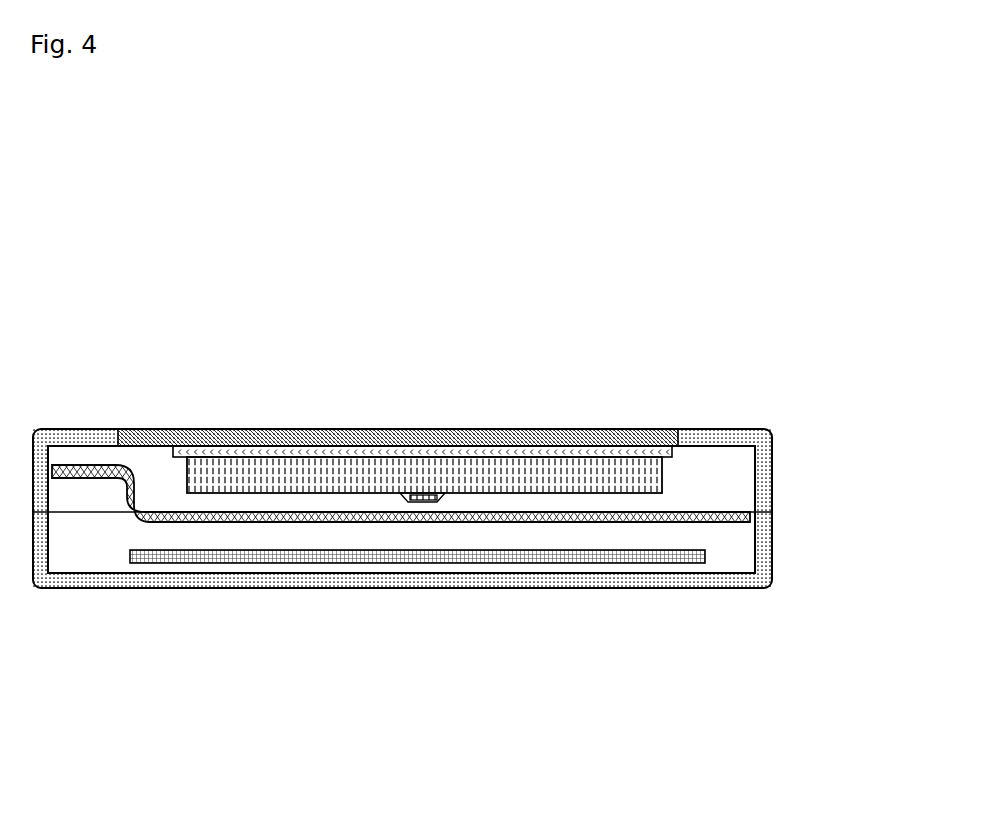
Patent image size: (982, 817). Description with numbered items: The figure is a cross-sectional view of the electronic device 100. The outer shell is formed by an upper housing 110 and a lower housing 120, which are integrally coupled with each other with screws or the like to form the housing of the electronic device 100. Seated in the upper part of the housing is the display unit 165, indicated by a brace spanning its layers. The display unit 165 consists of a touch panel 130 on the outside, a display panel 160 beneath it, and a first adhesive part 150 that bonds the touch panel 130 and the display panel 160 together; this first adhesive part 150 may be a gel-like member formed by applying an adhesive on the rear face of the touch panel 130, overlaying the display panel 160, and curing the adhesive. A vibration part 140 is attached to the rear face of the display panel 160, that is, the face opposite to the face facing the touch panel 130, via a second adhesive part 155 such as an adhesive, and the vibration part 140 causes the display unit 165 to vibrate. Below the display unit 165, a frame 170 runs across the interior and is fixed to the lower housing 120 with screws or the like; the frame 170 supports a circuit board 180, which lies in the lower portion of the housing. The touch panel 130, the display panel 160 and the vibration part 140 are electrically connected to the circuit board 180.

The electronic device 100 is at (634, 295).
The upper housing 110 is at (65, 437).
The lower housing 120 is at (92, 582).
The touch panel 130 is at (351, 437).
The vibration part 140 is at (435, 503).
The first adhesive part 150 is at (472, 452).
The second adhesive part 155 is at (405, 503).
The display panel 160 is at (549, 470).
The display unit 165 is at (608, 342).
The frame 170 is at (627, 521).
The circuit board 180 is at (254, 561).